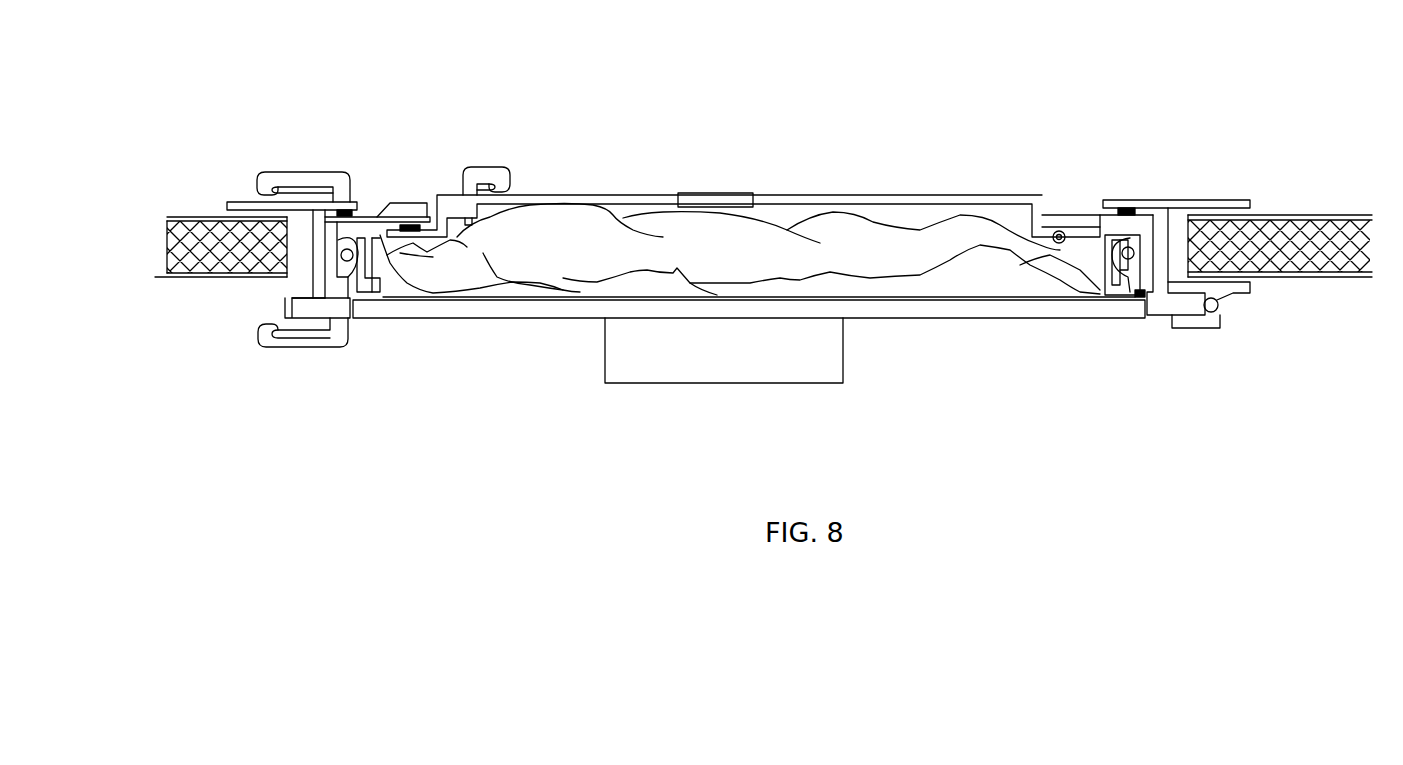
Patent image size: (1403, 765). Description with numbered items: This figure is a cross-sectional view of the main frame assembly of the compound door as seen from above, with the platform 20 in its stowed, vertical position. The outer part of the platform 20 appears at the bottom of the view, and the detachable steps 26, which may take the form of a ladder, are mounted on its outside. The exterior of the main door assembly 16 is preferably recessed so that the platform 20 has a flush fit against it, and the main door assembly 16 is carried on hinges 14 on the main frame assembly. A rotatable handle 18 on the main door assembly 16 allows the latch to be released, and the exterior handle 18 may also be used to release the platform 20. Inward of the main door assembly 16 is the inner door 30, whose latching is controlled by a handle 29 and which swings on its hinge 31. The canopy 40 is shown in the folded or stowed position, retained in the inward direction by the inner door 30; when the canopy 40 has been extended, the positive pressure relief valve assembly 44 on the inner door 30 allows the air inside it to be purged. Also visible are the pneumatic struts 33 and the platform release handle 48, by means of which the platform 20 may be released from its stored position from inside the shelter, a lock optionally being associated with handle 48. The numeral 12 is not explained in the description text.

The door panel 12 is at (236, 210).
The hinges 14 is at (1220, 305).
The main door assembly 16 is at (1163, 305).
The rotatable handle 18 is at (318, 338).
The platform 20 is at (1045, 305).
The steps 26 is at (697, 362).
The handle 29 is at (500, 175).
The inner door 30 is at (905, 200).
The hinge 31 is at (1062, 232).
The pneumatic struts 33 is at (343, 257).
The canopy 40 is at (537, 267).
The positive pressure relief valve assembly 44 is at (740, 200).
The platform release handle 48 is at (333, 190).